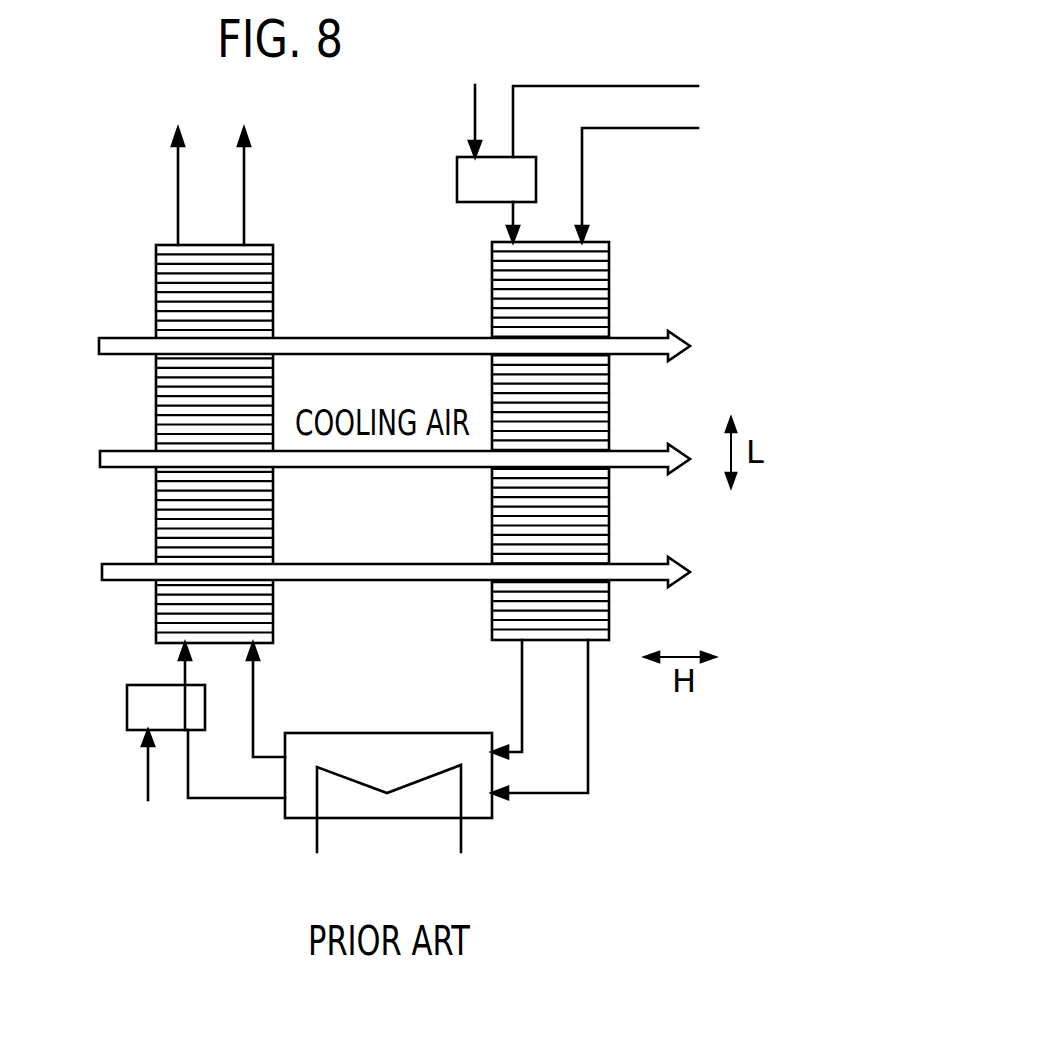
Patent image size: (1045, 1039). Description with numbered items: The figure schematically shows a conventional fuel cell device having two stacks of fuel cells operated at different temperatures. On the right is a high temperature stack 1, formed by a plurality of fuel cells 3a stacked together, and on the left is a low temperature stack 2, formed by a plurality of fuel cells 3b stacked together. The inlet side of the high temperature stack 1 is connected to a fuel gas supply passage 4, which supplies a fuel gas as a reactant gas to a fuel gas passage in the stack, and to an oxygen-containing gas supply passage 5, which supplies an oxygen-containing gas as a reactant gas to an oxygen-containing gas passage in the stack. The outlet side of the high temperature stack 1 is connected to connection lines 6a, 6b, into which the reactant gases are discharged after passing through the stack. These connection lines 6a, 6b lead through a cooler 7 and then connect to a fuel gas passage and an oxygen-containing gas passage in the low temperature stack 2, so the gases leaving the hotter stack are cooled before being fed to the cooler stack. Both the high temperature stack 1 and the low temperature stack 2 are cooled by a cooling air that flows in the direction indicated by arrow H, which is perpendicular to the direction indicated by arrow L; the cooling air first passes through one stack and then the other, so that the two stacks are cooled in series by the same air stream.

The high temperature stack 1 is at (567, 441).
The low temperature stack 2 is at (227, 385).
The fuel cells 3a is at (492, 289).
The fuel cells 3b is at (155, 289).
The fuel gas supply passage 4 is at (647, 84).
The oxygen-containing gas supply passage 5 is at (649, 130).
The connection line 6a is at (520, 698).
The connection line 6b is at (551, 791).
The cooler 7 is at (366, 733).